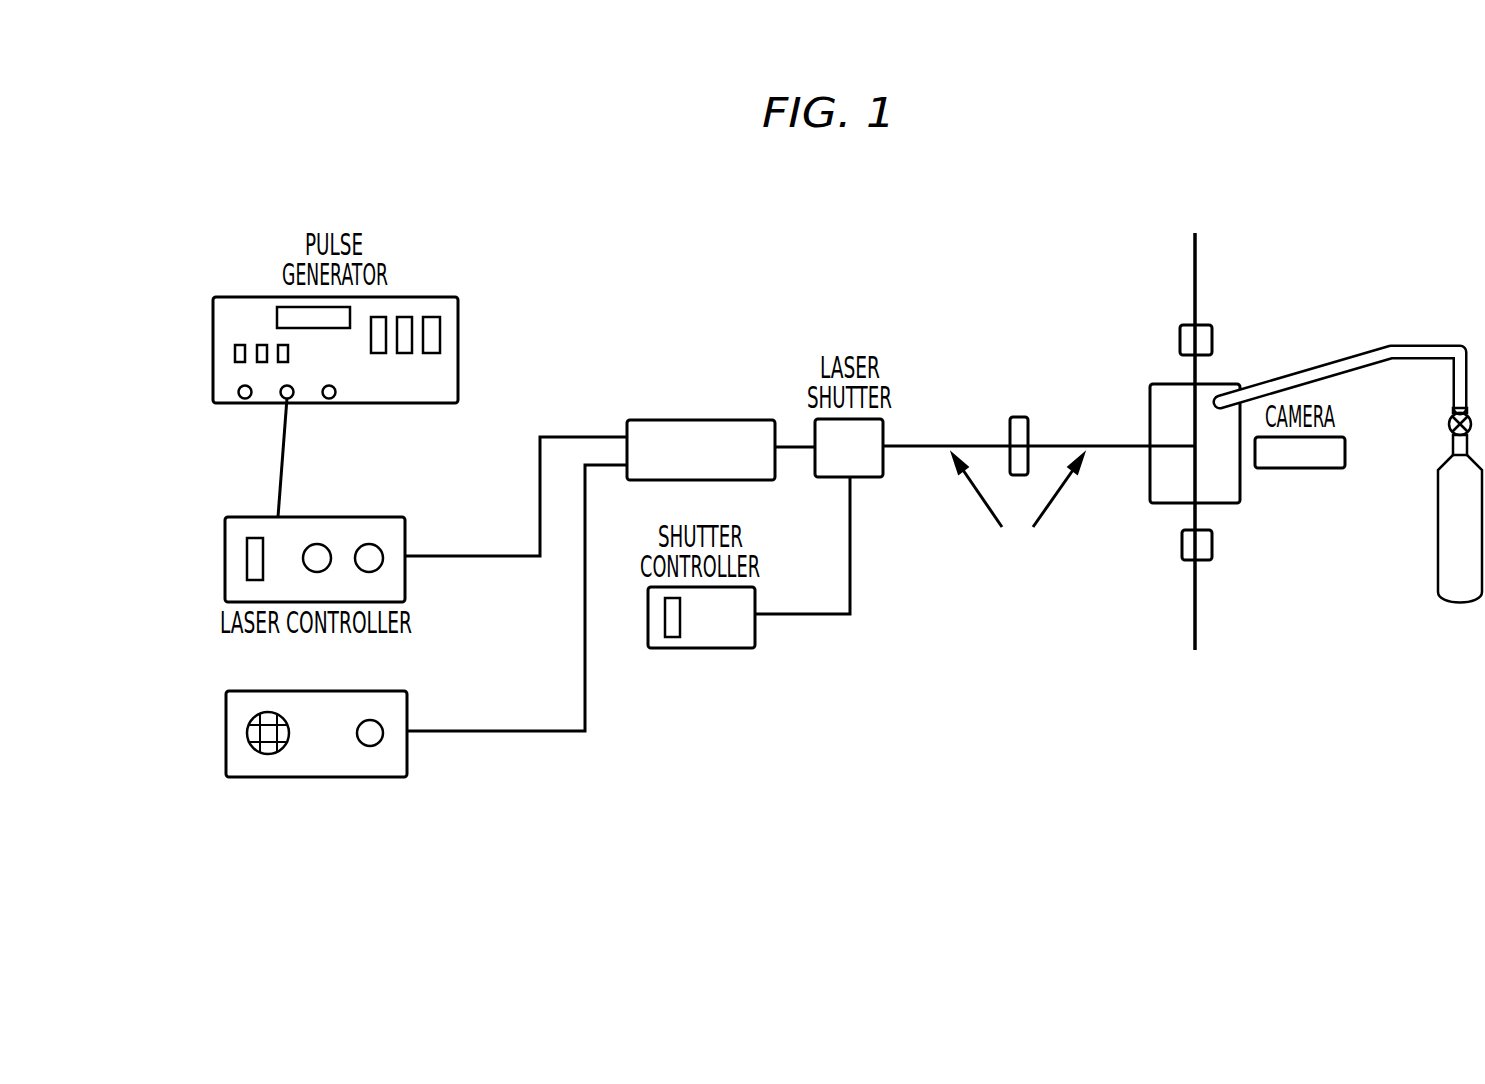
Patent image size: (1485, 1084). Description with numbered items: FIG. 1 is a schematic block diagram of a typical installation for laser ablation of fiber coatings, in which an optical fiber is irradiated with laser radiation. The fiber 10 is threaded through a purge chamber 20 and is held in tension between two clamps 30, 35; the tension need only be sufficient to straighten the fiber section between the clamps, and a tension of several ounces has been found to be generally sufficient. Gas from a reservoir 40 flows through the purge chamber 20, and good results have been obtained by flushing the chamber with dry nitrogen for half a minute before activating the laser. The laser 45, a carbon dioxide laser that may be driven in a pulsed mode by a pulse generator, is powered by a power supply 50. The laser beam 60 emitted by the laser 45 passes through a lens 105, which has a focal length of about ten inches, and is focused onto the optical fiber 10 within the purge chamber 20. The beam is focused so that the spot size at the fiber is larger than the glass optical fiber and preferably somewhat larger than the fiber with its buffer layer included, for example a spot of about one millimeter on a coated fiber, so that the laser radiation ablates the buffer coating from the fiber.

The fiber 10 is at (1261, 486).
The purge chamber 20 is at (1227, 375).
The clamp 30 is at (1180, 338).
The clamp 35 is at (1259, 553).
The reservoir 40 is at (1438, 563).
The laser 45 is at (765, 480).
The power supply 50 is at (226, 712).
The laser beam 60 is at (1032, 623).
The lens 105 is at (1017, 376).